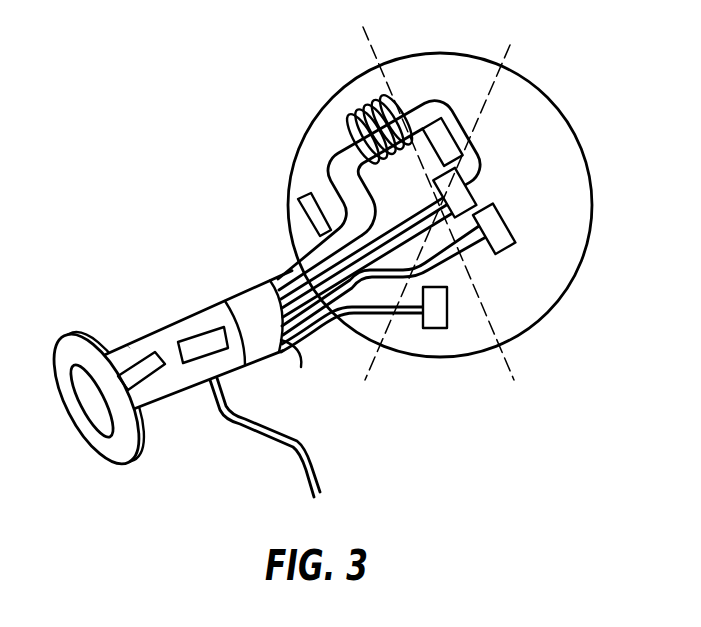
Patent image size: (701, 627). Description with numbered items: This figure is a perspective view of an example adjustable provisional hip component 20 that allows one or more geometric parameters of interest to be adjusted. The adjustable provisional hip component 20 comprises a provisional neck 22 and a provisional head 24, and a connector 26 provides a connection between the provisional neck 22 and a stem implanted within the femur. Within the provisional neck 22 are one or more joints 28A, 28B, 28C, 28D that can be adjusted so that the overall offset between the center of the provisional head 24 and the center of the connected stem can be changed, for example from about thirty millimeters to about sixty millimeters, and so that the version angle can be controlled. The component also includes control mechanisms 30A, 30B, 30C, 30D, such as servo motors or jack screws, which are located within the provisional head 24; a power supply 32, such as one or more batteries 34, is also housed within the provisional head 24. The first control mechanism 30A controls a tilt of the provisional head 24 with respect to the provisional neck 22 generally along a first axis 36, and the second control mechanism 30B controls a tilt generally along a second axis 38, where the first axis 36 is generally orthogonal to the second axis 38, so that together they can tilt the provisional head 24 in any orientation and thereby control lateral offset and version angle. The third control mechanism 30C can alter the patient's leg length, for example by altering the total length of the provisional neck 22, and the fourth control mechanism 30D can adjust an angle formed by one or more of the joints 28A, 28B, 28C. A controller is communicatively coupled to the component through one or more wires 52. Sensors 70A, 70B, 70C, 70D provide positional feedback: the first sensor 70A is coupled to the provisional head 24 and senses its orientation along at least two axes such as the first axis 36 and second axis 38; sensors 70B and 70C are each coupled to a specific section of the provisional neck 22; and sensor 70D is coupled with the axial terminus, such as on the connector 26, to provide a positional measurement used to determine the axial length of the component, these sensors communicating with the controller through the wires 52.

The adjustable provisional hip component 20 is at (160, 77).
The provisional neck 22 is at (171, 370).
The provisional head 24 is at (590, 203).
The connector 26 is at (117, 445).
The joint 28A is at (150, 334).
The joint 28B is at (218, 309).
The joint 28C is at (293, 345).
The joint 28D is at (262, 282).
The first control mechanism 30A is at (510, 214).
The second control mechanism 30B is at (475, 190).
The third control mechanism 30C is at (458, 136).
The fourth control mechanism 30D is at (447, 307).
The power supply 32 is at (348, 107).
The batteries 34 is at (376, 88).
The first axis 36 is at (373, 43).
The second axis 38 is at (511, 55).
The wires 52 is at (313, 476).
The first sensor 70A is at (304, 196).
The sensor 70B is at (207, 347).
The sensor 70C is at (140, 376).
The sensor 70D is at (113, 387).